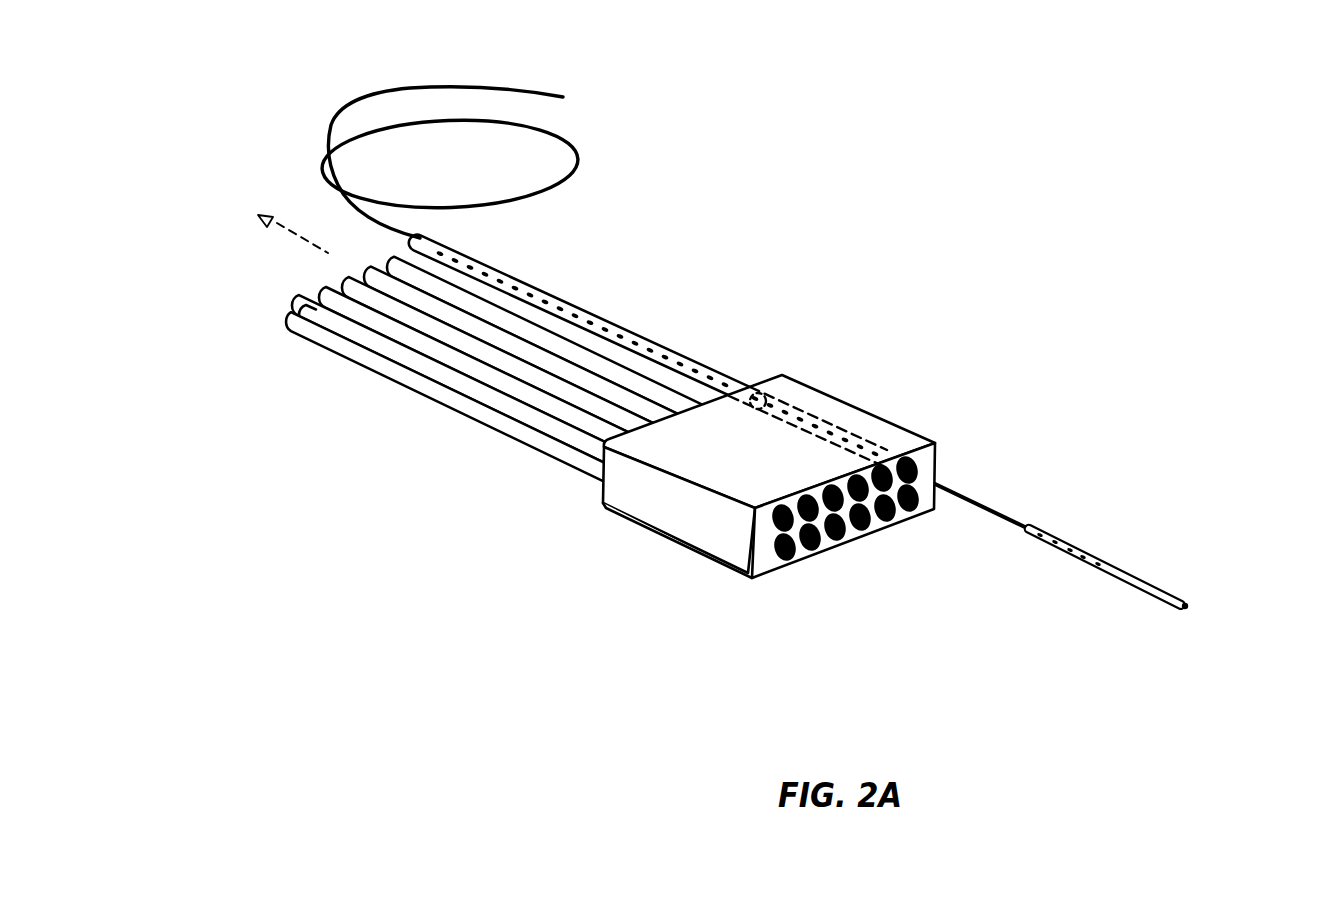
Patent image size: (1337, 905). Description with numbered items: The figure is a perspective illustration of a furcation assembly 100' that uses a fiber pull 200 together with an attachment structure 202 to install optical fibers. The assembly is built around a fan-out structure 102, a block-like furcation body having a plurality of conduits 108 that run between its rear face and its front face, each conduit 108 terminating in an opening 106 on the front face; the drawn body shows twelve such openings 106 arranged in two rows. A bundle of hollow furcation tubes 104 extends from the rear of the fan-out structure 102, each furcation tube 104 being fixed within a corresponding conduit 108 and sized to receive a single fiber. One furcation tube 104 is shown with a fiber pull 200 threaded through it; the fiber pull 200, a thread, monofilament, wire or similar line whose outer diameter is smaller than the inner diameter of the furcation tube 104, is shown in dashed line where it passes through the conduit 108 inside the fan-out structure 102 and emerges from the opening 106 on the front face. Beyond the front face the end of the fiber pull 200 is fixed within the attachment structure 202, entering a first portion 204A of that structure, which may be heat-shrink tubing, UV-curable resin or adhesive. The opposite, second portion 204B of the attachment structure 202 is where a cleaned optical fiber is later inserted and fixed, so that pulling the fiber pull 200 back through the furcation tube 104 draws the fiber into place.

The furcation assembly 100' is at (486, 519).
The fan-out structure 102 is at (687, 540).
The furcation tube 104 is at (607, 315).
The opening 106 is at (913, 471).
The conduit 108 is at (827, 426).
The fiber pull 200 is at (535, 293).
The attachment structure 202 is at (1133, 573).
The first portion of the attachment structure 204A is at (1092, 578).
The second portion of the attachment structure 204B is at (1182, 630).